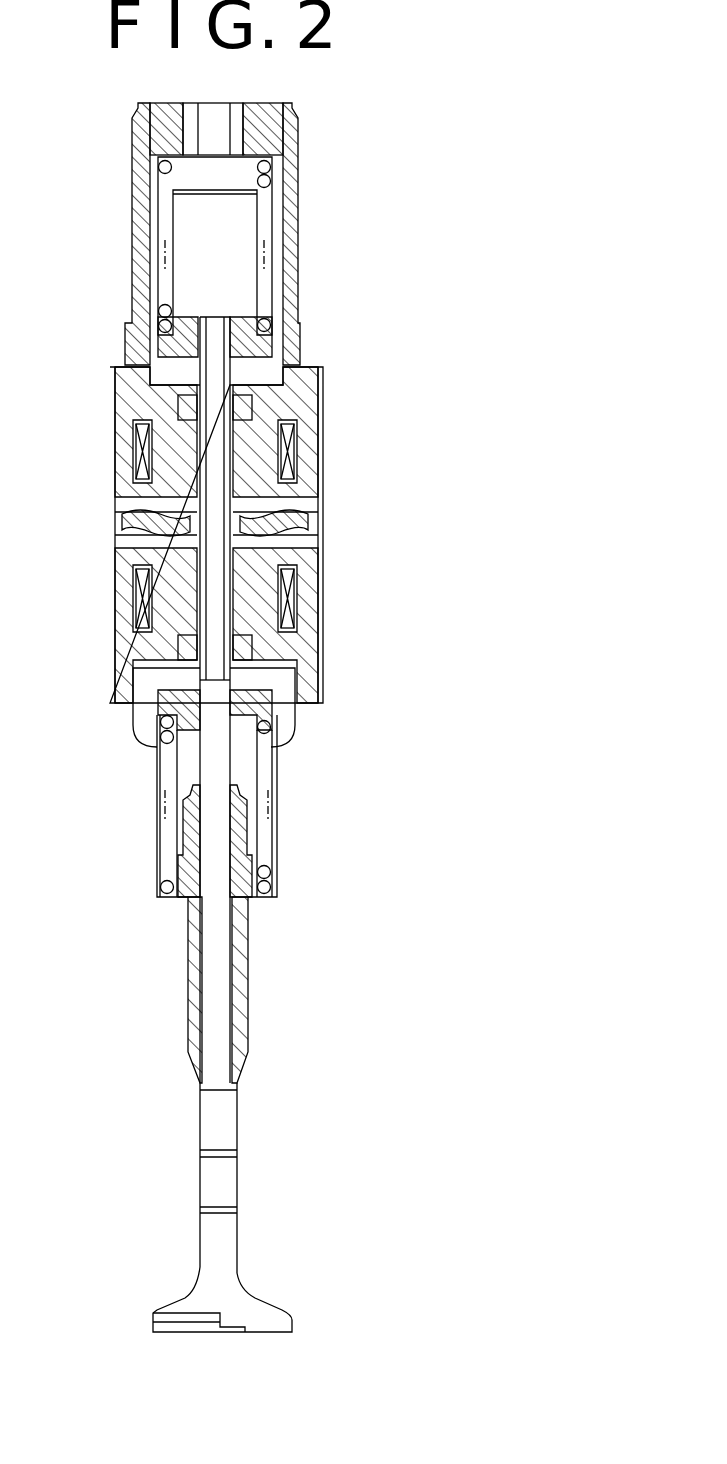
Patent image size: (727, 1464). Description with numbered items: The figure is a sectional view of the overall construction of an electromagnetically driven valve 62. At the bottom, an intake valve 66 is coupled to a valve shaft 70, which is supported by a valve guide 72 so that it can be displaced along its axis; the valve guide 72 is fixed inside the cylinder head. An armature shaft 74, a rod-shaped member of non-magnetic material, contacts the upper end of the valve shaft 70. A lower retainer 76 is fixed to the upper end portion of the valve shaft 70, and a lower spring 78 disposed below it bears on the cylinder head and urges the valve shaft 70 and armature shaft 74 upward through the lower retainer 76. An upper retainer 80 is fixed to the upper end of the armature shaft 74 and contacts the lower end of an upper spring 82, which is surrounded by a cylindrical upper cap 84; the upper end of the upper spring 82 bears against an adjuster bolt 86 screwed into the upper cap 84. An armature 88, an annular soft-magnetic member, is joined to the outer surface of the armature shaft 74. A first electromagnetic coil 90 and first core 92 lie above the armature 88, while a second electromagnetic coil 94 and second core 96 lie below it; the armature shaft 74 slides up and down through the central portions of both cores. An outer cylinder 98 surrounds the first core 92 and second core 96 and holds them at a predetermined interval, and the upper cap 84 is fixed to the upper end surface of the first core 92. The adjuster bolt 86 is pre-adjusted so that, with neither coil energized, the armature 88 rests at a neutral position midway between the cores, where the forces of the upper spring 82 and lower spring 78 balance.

The electromagnetically driven valve 62 is at (312, 209).
The intake valve 66 is at (205, 1293).
The valve shaft 70 is at (208, 1122).
The valve guide 72 is at (195, 985).
The armature shaft 74 is at (240, 500).
The lower retainer 76 is at (282, 716).
The lower spring 78 is at (268, 830).
The upper retainer 80 is at (270, 346).
The upper spring 82 is at (272, 268).
The upper cap 84 is at (133, 268).
The adjuster bolt 86 is at (260, 103).
The armature 88 is at (128, 508).
The first electromagnetic coil 90 is at (135, 458).
The first core 92 is at (312, 379).
The second electromagnetic coil 94 is at (135, 607).
The second core 96 is at (312, 688).
The outer cylinder 98 is at (115, 550).